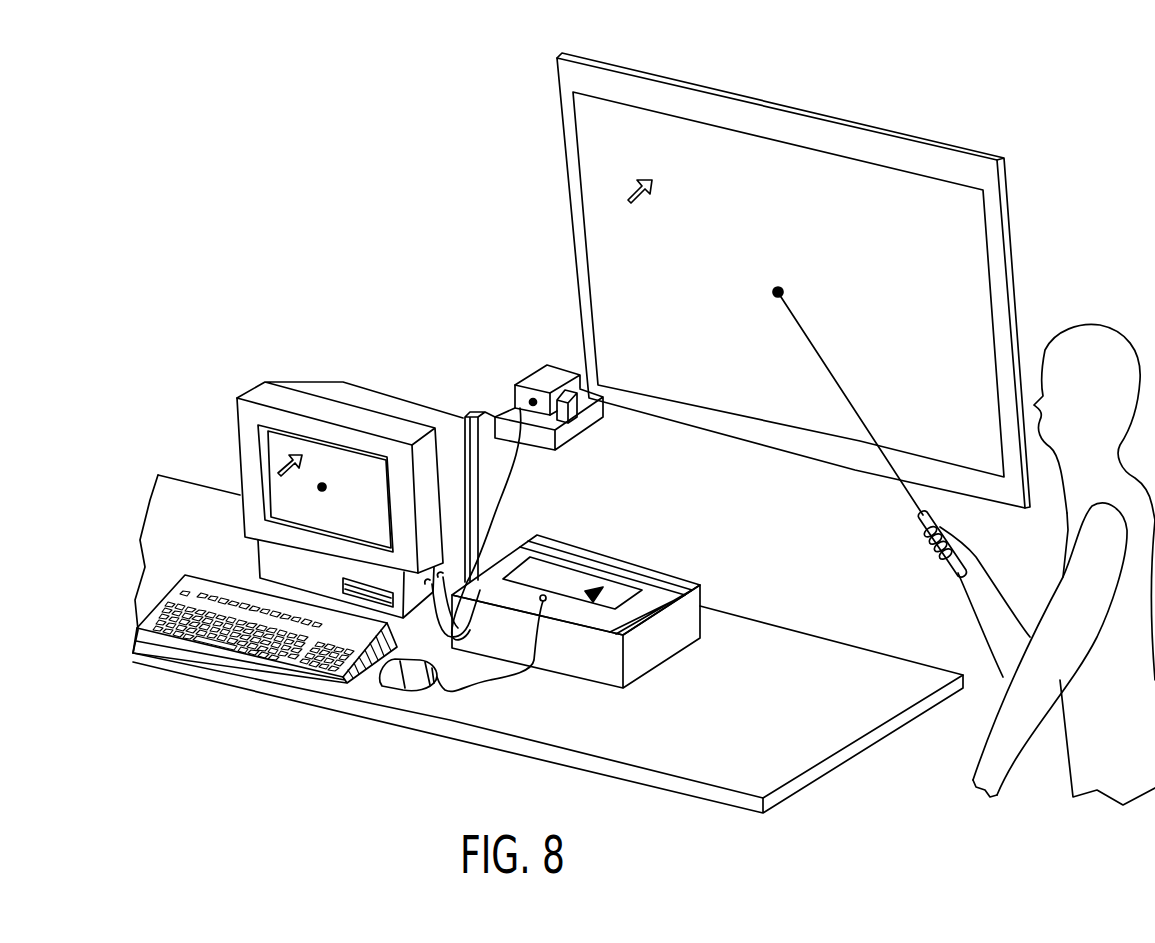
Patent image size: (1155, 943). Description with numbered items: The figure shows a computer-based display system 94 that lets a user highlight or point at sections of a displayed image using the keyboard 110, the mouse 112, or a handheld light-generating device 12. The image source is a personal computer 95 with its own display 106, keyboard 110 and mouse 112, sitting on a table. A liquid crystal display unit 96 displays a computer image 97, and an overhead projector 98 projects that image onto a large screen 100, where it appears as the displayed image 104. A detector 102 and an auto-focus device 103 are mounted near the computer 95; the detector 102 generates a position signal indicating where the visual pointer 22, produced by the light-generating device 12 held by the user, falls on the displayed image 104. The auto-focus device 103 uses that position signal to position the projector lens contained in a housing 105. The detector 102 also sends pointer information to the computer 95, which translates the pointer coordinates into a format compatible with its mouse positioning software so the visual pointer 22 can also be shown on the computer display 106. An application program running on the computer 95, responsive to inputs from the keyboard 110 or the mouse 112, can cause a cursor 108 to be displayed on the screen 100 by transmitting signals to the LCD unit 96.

The display system 94 is at (362, 166).
The screen 100 is at (868, 128).
The displayed image 104 is at (950, 248).
The cursor 108 is at (655, 181).
The visual pointer 22 is at (773, 294).
The light-generating device 12 is at (920, 518).
The personal computer 95 is at (236, 397).
The display 106 is at (282, 496).
The detector 102 is at (532, 398).
The auto-focus device 103 is at (578, 421).
The housing 105 is at (566, 450).
The liquid crystal display unit 96 is at (660, 560).
The overhead projector 98 is at (705, 596).
The computer image 97 is at (589, 600).
The keyboard 110 is at (163, 588).
The mouse 112 is at (437, 679).